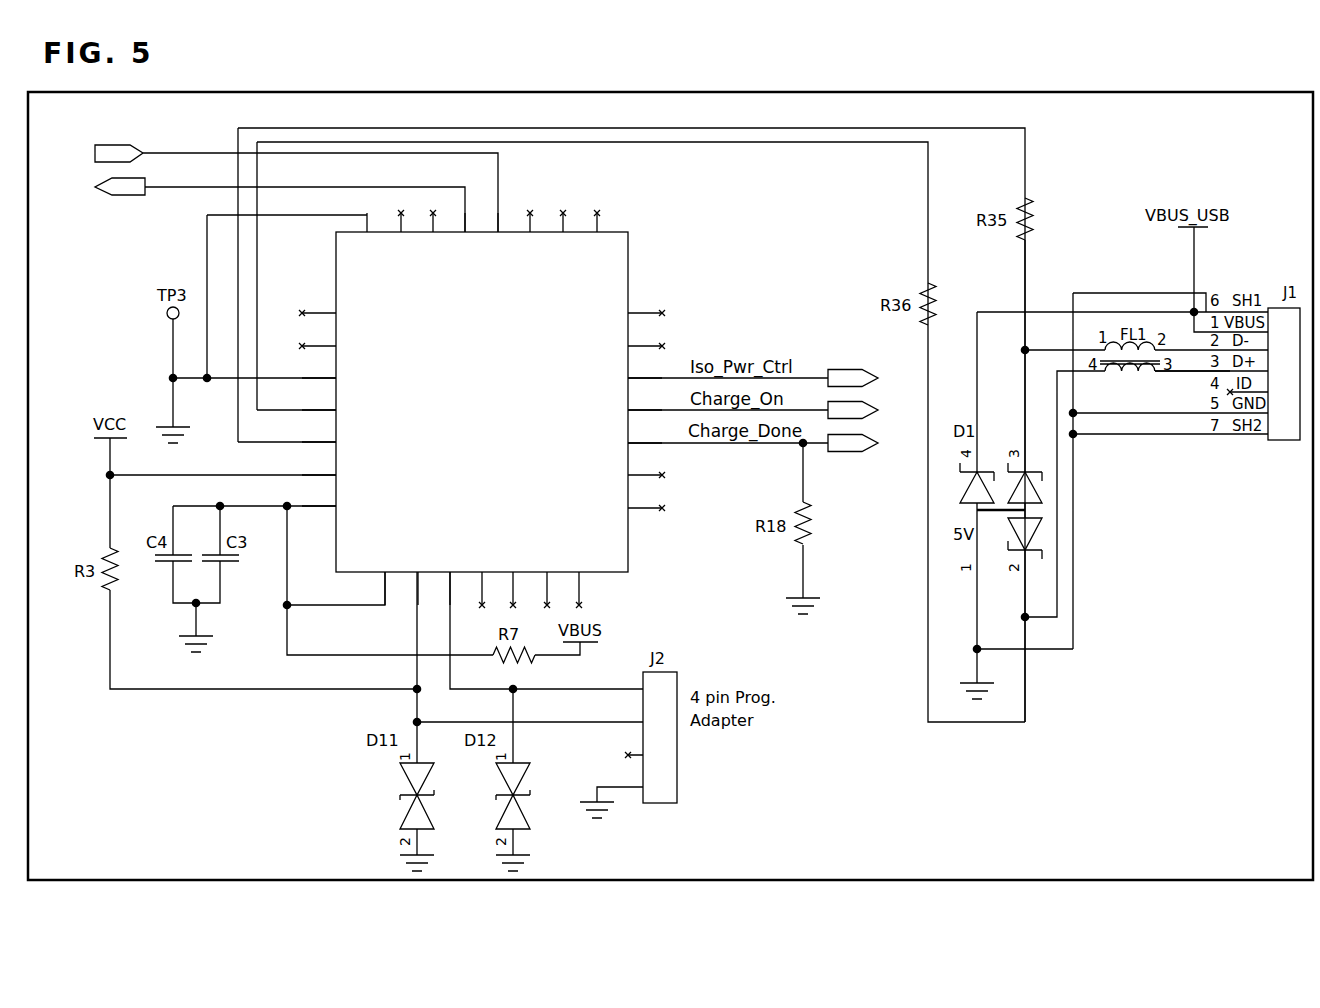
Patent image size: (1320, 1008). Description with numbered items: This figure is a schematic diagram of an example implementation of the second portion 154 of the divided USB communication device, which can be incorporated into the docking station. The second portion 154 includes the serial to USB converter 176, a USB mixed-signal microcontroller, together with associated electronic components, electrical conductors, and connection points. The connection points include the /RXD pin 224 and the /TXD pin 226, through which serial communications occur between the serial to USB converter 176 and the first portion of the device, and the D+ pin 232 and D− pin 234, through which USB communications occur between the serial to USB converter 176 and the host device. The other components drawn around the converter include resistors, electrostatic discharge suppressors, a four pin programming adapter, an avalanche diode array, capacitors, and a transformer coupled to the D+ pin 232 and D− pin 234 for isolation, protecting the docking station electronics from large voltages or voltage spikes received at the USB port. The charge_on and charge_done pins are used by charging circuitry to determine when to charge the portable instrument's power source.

The second portion 154 is at (670, 486).
The serial to USB converter 176 is at (620, 252).
The /RXD pin 224 is at (115, 143).
The /TXD pin 226 is at (112, 190).
The D+ pin 232 is at (1197, 372).
The D− pin 234 is at (1195, 350).